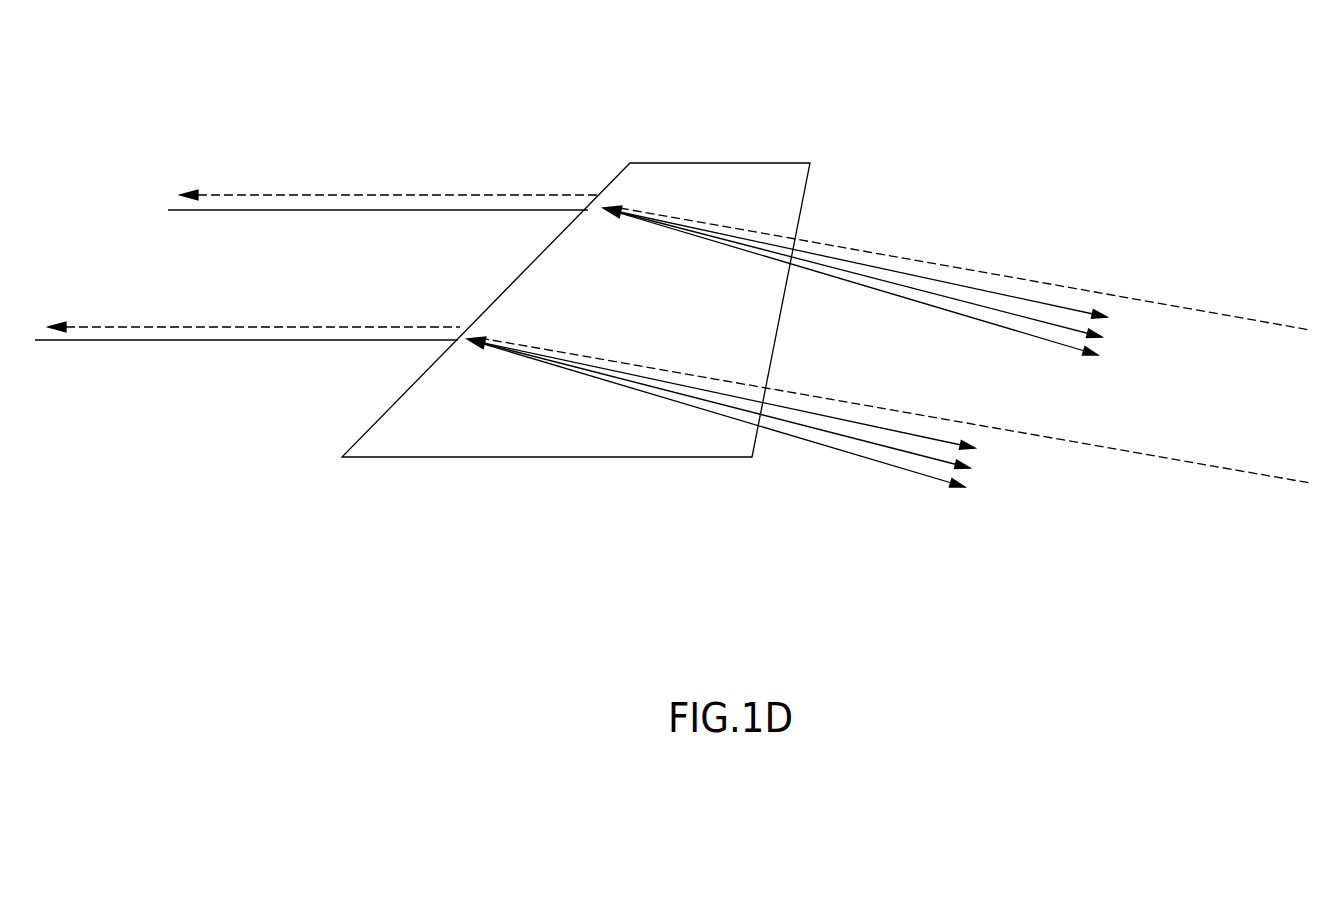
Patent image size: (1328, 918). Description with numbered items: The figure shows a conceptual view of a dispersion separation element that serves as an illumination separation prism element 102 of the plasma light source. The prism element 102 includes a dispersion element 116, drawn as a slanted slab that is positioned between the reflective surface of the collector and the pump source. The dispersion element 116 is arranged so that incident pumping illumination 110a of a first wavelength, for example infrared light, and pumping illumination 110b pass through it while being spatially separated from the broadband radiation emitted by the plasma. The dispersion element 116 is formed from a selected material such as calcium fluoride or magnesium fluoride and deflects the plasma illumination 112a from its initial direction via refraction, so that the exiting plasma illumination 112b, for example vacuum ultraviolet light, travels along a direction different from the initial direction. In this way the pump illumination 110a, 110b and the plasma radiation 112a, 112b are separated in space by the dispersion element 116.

The illumination separation prism element 102 is at (330, 97).
The incident pumping illumination 110a is at (1175, 283).
The pumping illumination 110b is at (412, 190).
The plasma illumination 112a is at (354, 222).
The exiting plasma illumination 112b is at (928, 315).
The dispersion element 116 is at (802, 210).